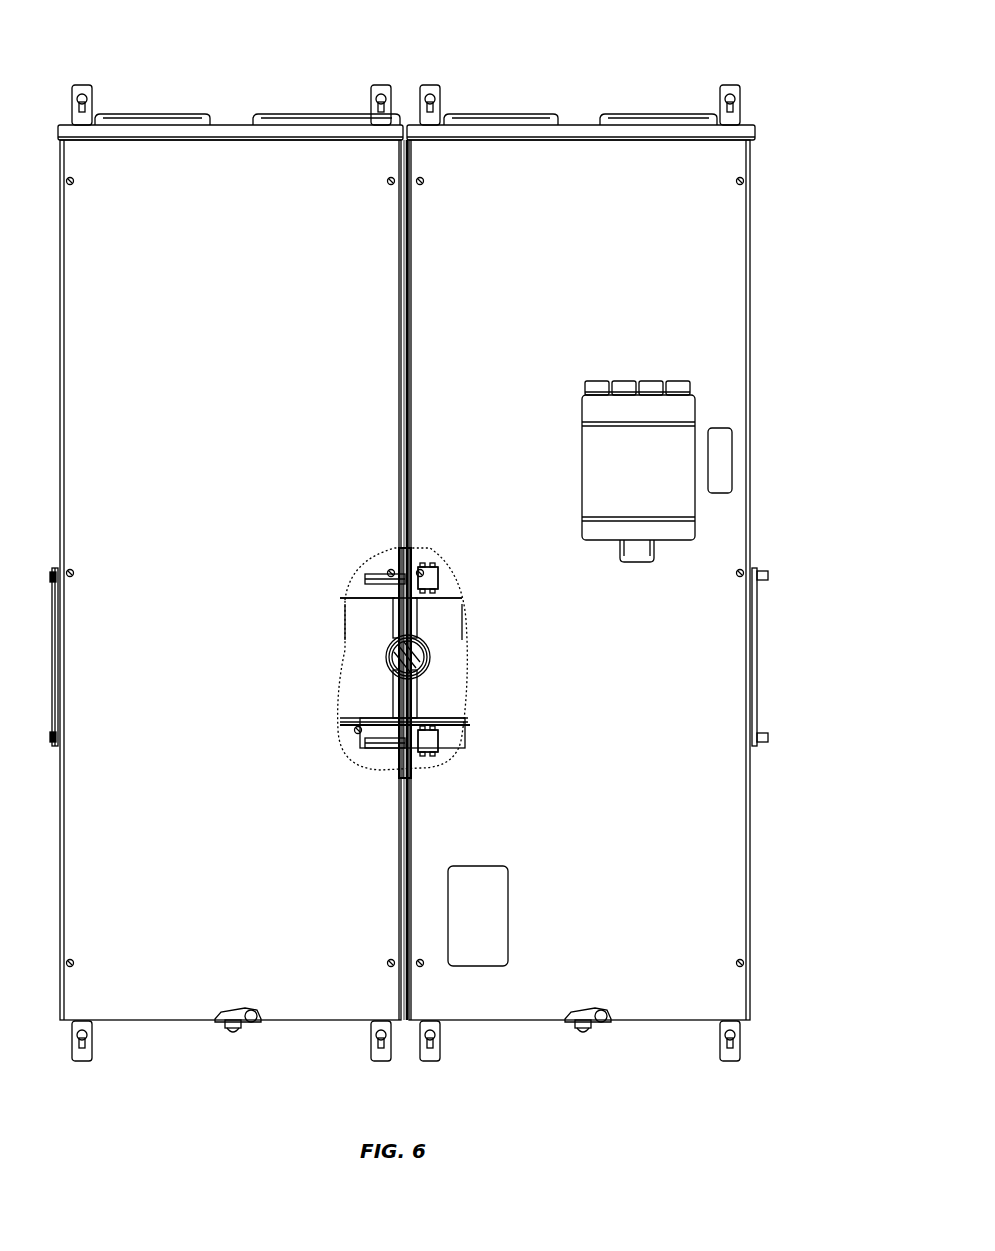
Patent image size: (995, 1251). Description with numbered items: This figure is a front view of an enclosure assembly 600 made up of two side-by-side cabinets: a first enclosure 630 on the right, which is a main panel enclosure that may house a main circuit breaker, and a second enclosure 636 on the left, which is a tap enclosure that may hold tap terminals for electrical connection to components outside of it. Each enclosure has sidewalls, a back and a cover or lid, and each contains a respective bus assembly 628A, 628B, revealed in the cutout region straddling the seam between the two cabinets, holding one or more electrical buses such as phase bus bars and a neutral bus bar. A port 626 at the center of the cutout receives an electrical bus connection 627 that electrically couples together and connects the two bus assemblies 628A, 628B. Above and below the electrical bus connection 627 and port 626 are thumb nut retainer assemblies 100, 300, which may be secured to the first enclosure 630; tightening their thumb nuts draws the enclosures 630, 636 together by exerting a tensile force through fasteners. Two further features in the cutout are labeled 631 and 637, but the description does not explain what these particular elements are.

The enclosure assembly 600 is at (409, 534).
The second enclosure 636 is at (216, 687).
The first enclosure 630 is at (613, 682).
The port 626 is at (438, 638).
The electrical bus connection 627 is at (372, 647).
The locking rod 631 is at (420, 558).
The thumb nut retainer assembly 100 is at (440, 567).
The thumb nut retainer assembly 300 is at (428, 659).
The bus assembly 628A is at (358, 690).
The bus assembly 628B is at (445, 688).
The mounting bracket 637 is at (395, 758).